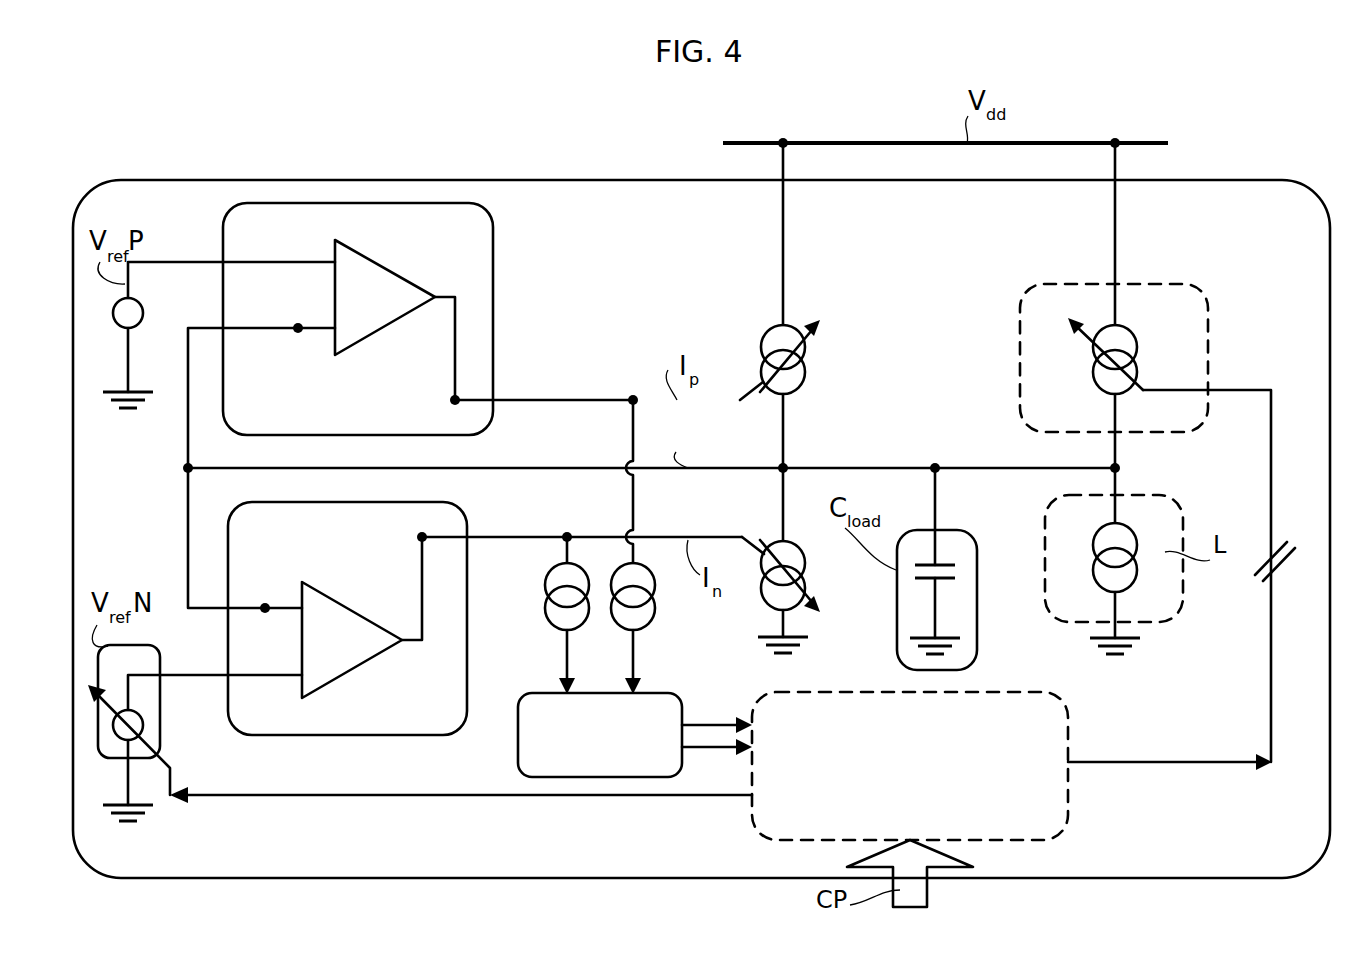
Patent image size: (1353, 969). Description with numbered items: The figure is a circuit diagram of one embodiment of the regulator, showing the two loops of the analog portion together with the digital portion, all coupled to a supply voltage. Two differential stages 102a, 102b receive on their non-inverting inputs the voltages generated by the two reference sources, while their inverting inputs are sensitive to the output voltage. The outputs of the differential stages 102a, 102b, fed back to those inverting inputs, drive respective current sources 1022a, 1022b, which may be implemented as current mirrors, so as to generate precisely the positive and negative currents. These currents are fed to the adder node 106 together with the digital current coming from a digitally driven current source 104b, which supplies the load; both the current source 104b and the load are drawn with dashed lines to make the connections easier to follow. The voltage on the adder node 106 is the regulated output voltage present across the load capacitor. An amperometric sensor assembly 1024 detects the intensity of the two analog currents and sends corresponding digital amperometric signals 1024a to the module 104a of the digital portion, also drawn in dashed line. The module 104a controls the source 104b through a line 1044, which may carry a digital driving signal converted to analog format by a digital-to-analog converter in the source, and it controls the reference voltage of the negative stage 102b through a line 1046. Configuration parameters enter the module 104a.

The differential stage 102a is at (300, 214).
The differential stage 102b is at (355, 722).
The current source 1022a is at (814, 377).
The current source 1022b is at (752, 607).
The module 104a is at (1055, 836).
The digitally driven current source 104b is at (1195, 290).
The adder node 106 is at (1132, 473).
The amperometric sensor assembly 1024 is at (503, 752).
The digital amperometric signals 1024a is at (590, 765).
The line 1044 is at (1268, 635).
The line 1046 is at (243, 795).